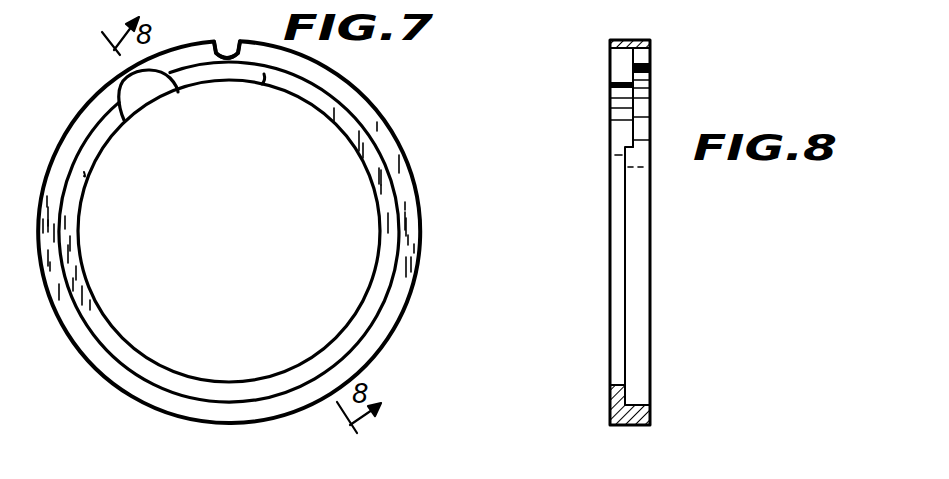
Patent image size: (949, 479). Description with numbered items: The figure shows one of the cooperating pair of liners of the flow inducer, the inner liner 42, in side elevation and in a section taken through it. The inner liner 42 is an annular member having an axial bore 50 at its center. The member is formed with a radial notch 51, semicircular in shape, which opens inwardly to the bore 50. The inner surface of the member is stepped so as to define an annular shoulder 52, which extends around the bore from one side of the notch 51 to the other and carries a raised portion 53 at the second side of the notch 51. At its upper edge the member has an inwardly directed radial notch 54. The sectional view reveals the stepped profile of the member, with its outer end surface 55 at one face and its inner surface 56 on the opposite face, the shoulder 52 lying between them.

In FIG. 7, the inner liner 42 is at (393, 136).
In FIG. 8, the inner liner 42 is at (608, 90).
In FIG. 7, the axial bore 50 is at (340, 275).
In FIG. 8, the axial bore 50 is at (610, 212).
In FIG. 7, the radial notch 51 is at (138, 93).
In FIG. 7, the annular shoulder 52 is at (85, 174).
In FIG. 7, the raised portion 53 is at (262, 84).
In FIG. 7, the radial notch 54 is at (230, 44).
In FIG. 8, the outer end surface 55 is at (610, 395).
In FIG. 8, the inner surface 56 is at (650, 82).